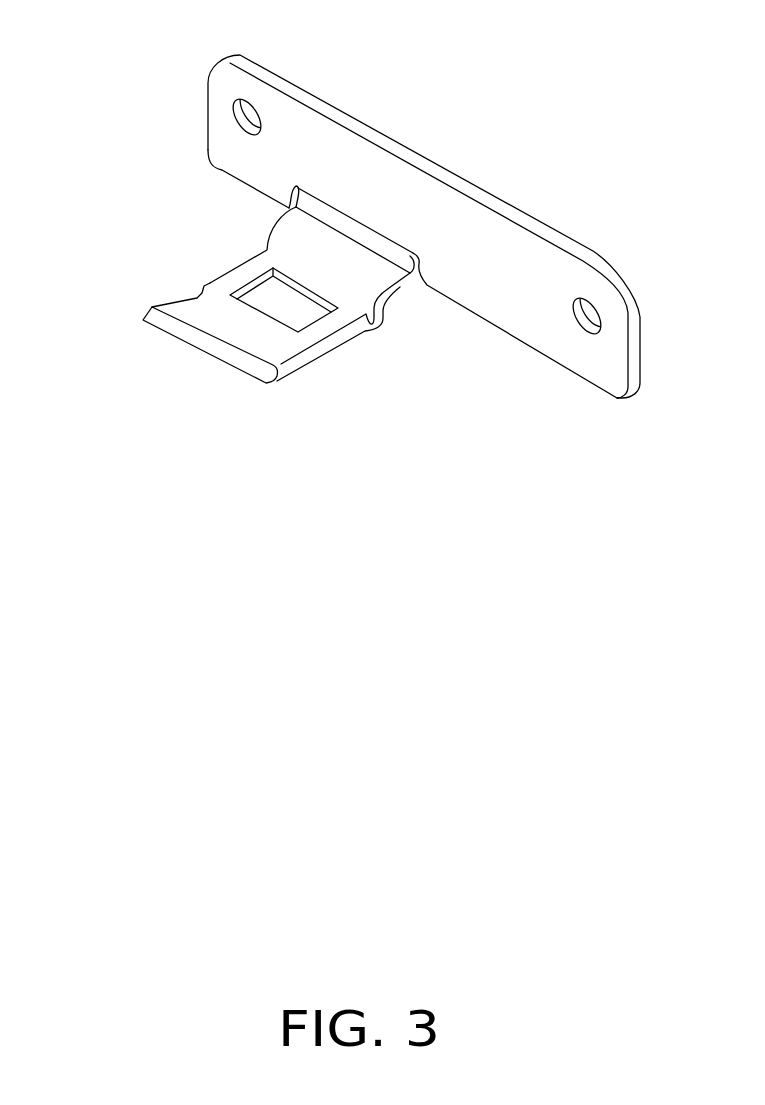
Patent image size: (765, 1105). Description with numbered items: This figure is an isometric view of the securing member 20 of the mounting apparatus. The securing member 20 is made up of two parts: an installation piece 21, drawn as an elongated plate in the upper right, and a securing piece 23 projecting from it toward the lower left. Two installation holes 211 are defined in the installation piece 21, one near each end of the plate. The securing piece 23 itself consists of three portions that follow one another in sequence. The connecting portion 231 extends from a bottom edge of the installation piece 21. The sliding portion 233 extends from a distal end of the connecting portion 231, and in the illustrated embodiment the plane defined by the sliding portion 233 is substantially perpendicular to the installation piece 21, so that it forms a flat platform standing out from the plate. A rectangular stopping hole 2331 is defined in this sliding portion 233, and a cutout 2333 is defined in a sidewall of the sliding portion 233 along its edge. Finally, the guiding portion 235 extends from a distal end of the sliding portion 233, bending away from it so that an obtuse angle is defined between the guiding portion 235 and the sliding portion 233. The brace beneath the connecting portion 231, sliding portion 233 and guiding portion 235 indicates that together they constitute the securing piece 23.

The securing member 20 is at (493, 79).
The installation piece 21 is at (482, 245).
The installation holes 211 is at (590, 323).
The securing piece 23 is at (467, 467).
The connecting portion 231 is at (370, 270).
The sliding portion 233 is at (290, 340).
The rectangular stopping hole 2331 is at (268, 302).
The cutout 2333 is at (200, 295).
The guiding portion 235 is at (237, 365).